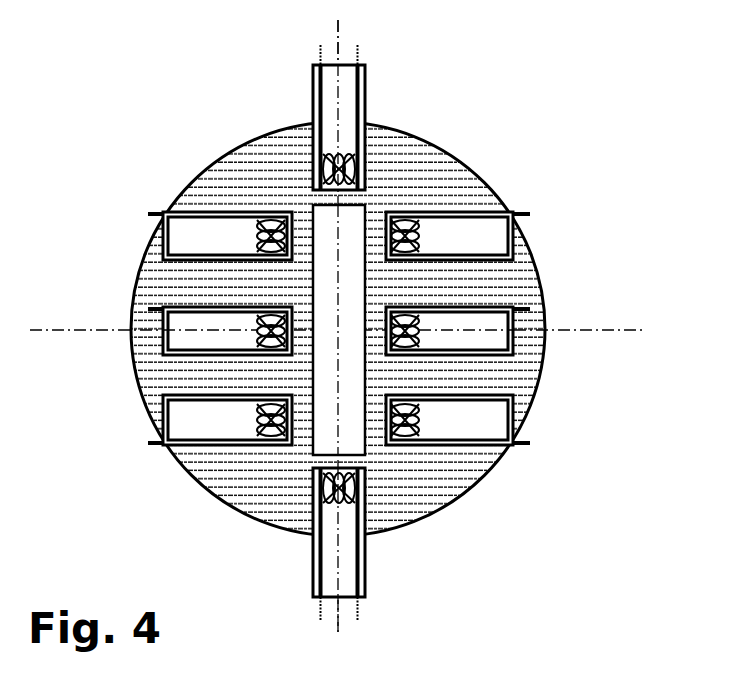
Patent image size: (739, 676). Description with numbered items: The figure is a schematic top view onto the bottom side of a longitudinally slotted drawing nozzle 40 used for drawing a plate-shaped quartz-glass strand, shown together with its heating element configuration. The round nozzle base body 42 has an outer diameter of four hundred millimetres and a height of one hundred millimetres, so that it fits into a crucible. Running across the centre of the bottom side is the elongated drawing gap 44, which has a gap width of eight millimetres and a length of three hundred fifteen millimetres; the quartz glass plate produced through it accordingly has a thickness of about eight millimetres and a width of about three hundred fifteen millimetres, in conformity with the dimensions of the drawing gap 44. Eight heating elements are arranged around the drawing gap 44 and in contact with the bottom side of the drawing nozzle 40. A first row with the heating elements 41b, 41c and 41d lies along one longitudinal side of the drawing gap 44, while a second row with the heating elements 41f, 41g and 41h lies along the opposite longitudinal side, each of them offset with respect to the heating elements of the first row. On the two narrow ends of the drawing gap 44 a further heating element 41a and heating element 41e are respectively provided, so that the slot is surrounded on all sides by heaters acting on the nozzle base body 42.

The drawing nozzle 40 is at (233, 136).
The heating element 41a is at (347, 90).
The heating element 41b is at (487, 228).
The heating element 41c is at (492, 318).
The heating element 41d is at (497, 432).
The heating element 41e is at (343, 540).
The heating element 41f is at (185, 430).
The heating element 41g is at (175, 320).
The heating element 41h is at (173, 230).
The nozzle base body 42 is at (267, 497).
The drawing gap 44 is at (354, 235).